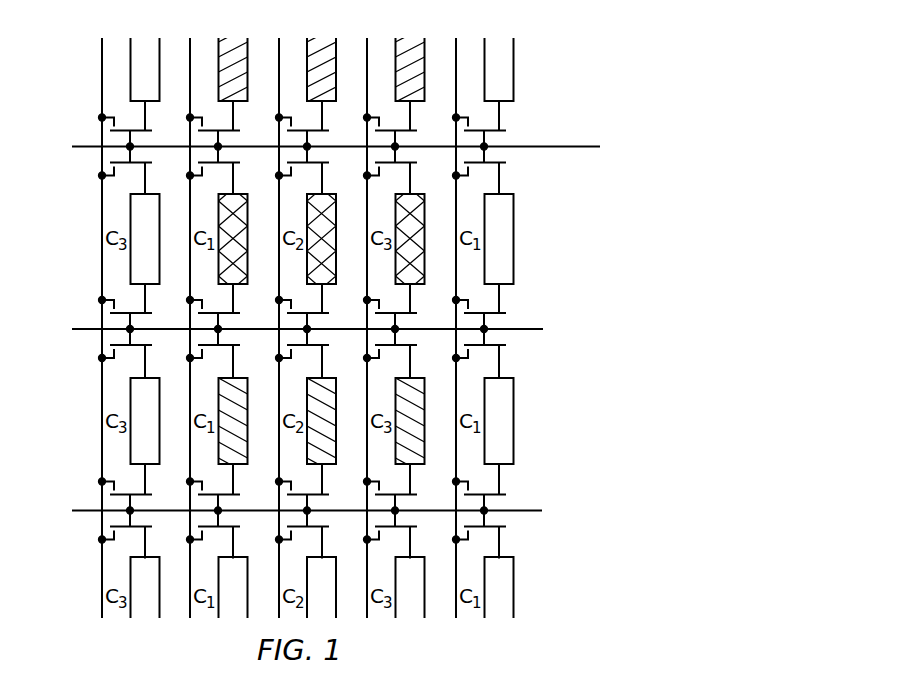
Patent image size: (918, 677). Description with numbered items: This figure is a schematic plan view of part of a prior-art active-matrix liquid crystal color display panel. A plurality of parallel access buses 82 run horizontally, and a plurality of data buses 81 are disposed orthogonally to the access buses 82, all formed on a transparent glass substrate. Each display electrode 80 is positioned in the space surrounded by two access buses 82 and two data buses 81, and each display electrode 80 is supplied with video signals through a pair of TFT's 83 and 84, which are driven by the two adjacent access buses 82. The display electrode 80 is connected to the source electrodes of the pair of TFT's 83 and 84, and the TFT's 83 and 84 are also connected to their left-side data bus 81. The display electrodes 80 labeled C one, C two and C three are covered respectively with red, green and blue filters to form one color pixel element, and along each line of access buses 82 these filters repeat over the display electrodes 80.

The display electrode 80 is at (503, 250).
The data bus 81 is at (457, 44).
The access bus 82 is at (350, 148).
The TFT 83 is at (508, 180).
The TFT 84 is at (512, 120).